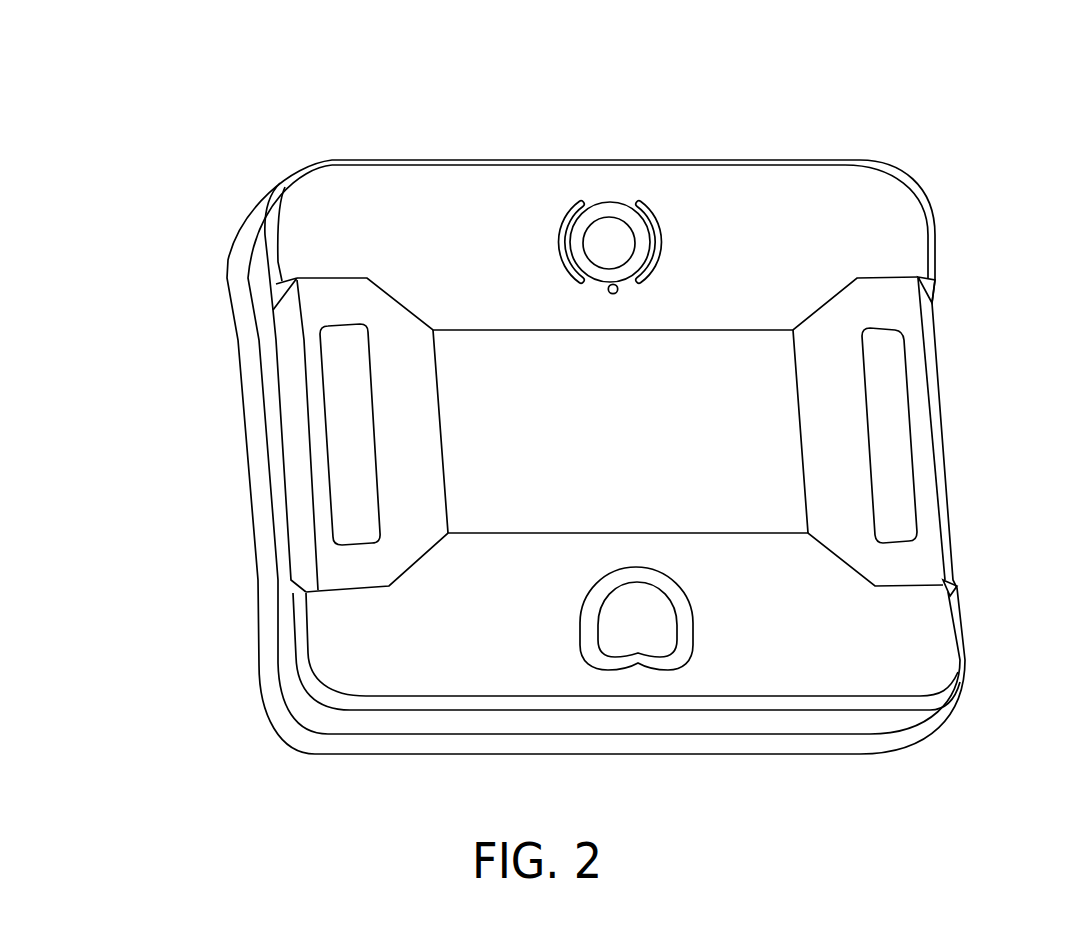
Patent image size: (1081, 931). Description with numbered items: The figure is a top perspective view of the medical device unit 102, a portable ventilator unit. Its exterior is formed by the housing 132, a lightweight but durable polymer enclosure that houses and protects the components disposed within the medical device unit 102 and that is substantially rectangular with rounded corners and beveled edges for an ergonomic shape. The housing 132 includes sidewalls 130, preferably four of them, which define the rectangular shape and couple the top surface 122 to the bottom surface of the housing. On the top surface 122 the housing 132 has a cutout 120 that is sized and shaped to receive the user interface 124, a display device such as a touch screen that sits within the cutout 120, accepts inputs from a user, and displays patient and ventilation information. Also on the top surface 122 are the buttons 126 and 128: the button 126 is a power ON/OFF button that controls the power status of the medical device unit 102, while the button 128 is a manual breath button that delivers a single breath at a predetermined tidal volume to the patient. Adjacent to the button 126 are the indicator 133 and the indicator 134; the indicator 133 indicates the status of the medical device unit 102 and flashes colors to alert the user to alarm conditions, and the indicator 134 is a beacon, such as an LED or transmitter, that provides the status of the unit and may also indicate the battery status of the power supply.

The medical device unit 102 is at (97, 110).
The cutout 120 is at (437, 403).
The top surface 122 is at (332, 207).
The user interface 124 is at (438, 458).
The button 126 is at (610, 230).
The button 128 is at (623, 613).
The sidewalls 130 is at (933, 425).
The housing 132 is at (285, 617).
The indicator 133 is at (565, 223).
The indicator 134 is at (607, 292).